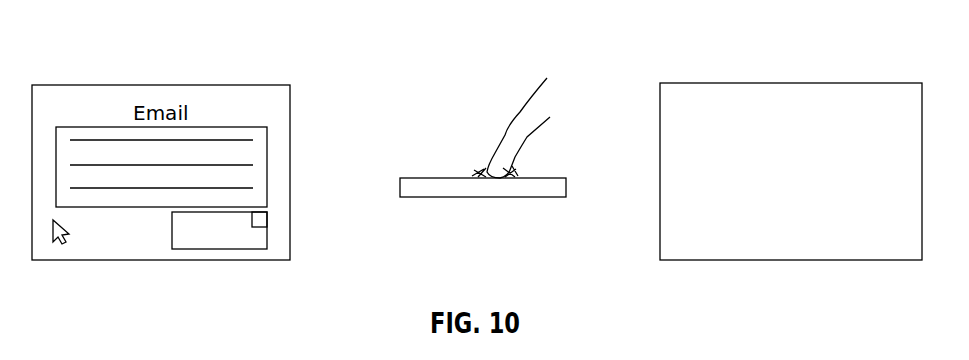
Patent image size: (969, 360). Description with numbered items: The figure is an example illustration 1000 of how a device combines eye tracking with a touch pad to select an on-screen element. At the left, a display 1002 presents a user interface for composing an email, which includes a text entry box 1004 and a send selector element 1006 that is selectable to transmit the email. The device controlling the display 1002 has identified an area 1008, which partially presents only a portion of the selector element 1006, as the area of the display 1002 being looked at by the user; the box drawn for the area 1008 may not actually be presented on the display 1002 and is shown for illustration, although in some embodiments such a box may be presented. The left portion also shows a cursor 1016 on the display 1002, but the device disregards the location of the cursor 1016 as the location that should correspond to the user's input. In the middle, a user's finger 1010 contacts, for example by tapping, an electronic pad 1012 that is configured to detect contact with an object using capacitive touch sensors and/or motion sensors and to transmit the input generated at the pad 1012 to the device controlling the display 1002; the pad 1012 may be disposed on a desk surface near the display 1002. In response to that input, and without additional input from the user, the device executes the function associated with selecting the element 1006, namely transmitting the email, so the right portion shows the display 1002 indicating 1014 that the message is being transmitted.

The example illustration 1000 is at (392, 62).
The display 1002 is at (230, 85).
The text entry box 1004 is at (211, 127).
The send selector element 1006 is at (172, 226).
The area 1008 is at (268, 212).
The user's finger 1010 is at (520, 110).
The electronic pad 1012 is at (518, 197).
The indication 1014 is at (817, 158).
The cursor 1016 is at (57, 245).